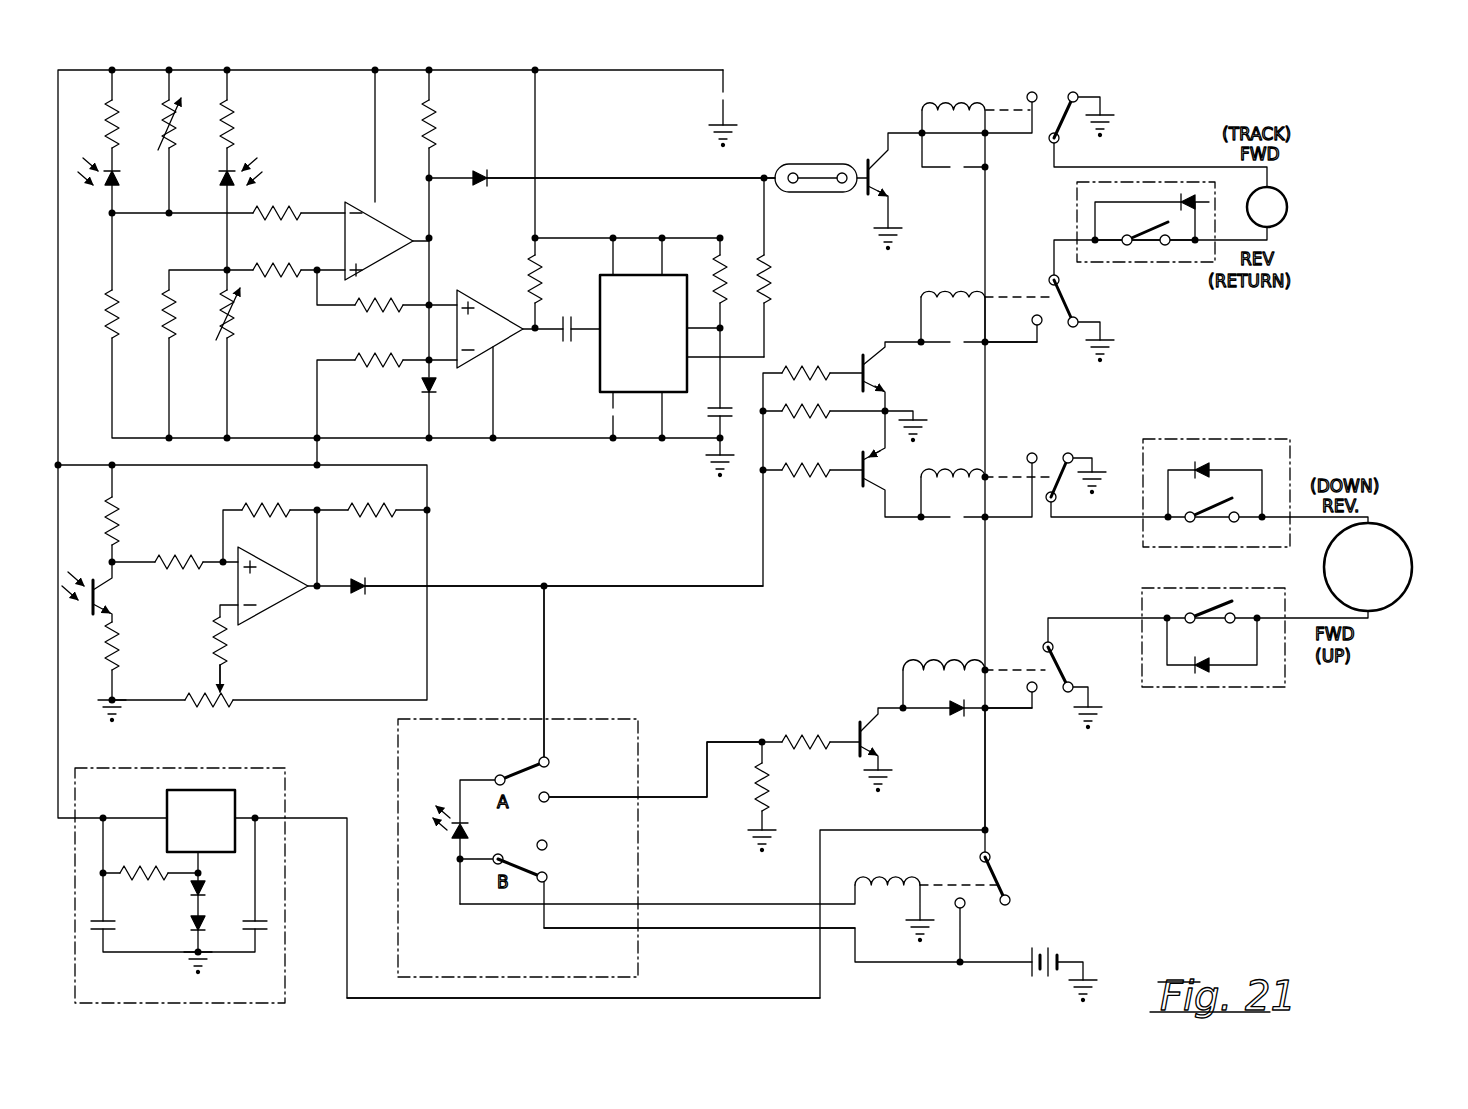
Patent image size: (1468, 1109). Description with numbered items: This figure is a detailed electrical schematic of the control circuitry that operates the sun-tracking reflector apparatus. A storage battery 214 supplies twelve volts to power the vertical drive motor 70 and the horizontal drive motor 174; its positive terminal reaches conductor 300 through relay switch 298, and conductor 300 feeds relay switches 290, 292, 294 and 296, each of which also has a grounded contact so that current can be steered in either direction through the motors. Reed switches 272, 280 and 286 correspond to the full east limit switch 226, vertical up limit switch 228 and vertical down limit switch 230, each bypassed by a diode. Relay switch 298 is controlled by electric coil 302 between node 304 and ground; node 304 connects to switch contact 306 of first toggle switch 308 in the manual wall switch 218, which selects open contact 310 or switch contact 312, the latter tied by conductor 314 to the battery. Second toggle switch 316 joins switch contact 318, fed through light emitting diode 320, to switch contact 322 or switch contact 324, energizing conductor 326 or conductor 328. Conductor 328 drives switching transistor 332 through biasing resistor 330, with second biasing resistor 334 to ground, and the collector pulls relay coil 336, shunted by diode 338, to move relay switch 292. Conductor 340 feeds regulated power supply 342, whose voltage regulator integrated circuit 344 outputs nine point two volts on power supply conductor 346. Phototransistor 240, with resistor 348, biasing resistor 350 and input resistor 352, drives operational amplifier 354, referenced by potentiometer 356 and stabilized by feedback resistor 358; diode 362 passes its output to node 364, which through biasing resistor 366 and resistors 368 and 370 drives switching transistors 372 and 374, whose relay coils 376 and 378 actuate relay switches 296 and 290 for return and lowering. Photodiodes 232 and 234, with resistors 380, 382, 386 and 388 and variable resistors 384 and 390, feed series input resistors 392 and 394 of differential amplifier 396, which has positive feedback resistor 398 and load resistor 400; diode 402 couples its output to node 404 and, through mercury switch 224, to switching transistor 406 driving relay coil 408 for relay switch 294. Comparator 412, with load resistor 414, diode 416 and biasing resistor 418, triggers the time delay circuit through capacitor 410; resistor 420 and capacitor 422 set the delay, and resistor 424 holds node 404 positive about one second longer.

The vertical drive motor 70 is at (1385, 567).
The horizontal drive motor 174 is at (1294, 193).
The storage battery 214 is at (1055, 934).
The manual wall switch 218 is at (521, 832).
The mercury switch 224 is at (816, 153).
The full east limit switch 226 is at (1146, 240).
The vertical up limit switch 228 is at (1229, 658).
The vertical down limit switch 230 is at (1230, 475).
The photodiode 232 is at (257, 153).
The photodiode 234 is at (91, 199).
The phototransistor 240 is at (124, 594).
The reed switch 272 is at (1145, 260).
The reed switch 280 is at (1192, 608).
The reed switch 286 is at (1212, 523).
The relay switch 290 is at (1051, 454).
The relay switch 292 is at (1049, 704).
The relay switch 294 is at (1081, 107).
The relay switch 296 is at (1055, 331).
The relay switch 298 is at (1006, 866).
The conductor 300 is at (1010, 769).
The electric coil 302 is at (884, 863).
The node 304 is at (434, 880).
The switch contact 306 is at (506, 840).
The first toggle switch 308 is at (558, 856).
The open contact 310 is at (567, 830).
The switch contact 312 is at (575, 878).
The conductor 314 is at (699, 950).
The second toggle switch 316 is at (558, 756).
The switch contact 318 is at (460, 758).
The light emitting diode 320 is at (436, 808).
The switch contact 322 is at (509, 749).
The switch contact 324 is at (568, 783).
The conductor 326 is at (572, 673).
The conductor 328 is at (655, 788).
The biasing resistor 330 is at (812, 718).
The switching transistor 332 is at (902, 758).
The second biasing resistor 334 is at (792, 787).
The relay coil 336 is at (944, 640).
The diode 338 is at (953, 731).
The conductor 340 is at (583, 986).
The regulated power supply 342 is at (209, 868).
The three terminal voltage regulator integrated circuit 344 is at (220, 793).
The power supply conductor 346 is at (94, 702).
The resistor 348 is at (135, 512).
The biasing resistor 350 is at (140, 646).
The input resistor 352 is at (176, 541).
The operational amplifier 354 is at (283, 588).
The potentiometer 356 is at (243, 662).
The feedback resistor 358 is at (274, 498).
The diode 362 is at (374, 603).
The node 364 is at (564, 564).
The biasing resistor 366 is at (589, 460).
The resistor 368 is at (806, 354).
The resistor 370 is at (806, 492).
The switching transistor 372 is at (864, 347).
The switching transistor 374 is at (855, 491).
The relay coil 376 is at (953, 274).
The relay coil 378 is at (953, 452).
The resistor 380 is at (253, 114).
The resistor 382 is at (149, 300).
The variable resistor 384 is at (251, 336).
The resistor 386 is at (90, 121).
The resistor 388 is at (89, 300).
The variable resistor 390 is at (150, 115).
The series input resistor 392 is at (284, 253).
The series input resistor 394 is at (293, 196).
The differential amplifier 396 is at (383, 232).
The positive feedback resistor 398 is at (385, 291).
The load resistor 400 is at (455, 116).
The diode 402 is at (483, 156).
The node 404 is at (645, 146).
The switching transistor 406 is at (857, 192).
The relay coil / time delay integrated circuit 408 is at (758, 235).
The capacitor 410 is at (573, 304).
The comparator 412 is at (490, 312).
The load resistor 414 is at (506, 266).
The diode 416 is at (394, 403).
The biasing resistor 418 is at (369, 378).
The resistor 420 is at (707, 250).
The capacitor 422 is at (682, 440).
The resistor 424 is at (791, 267).